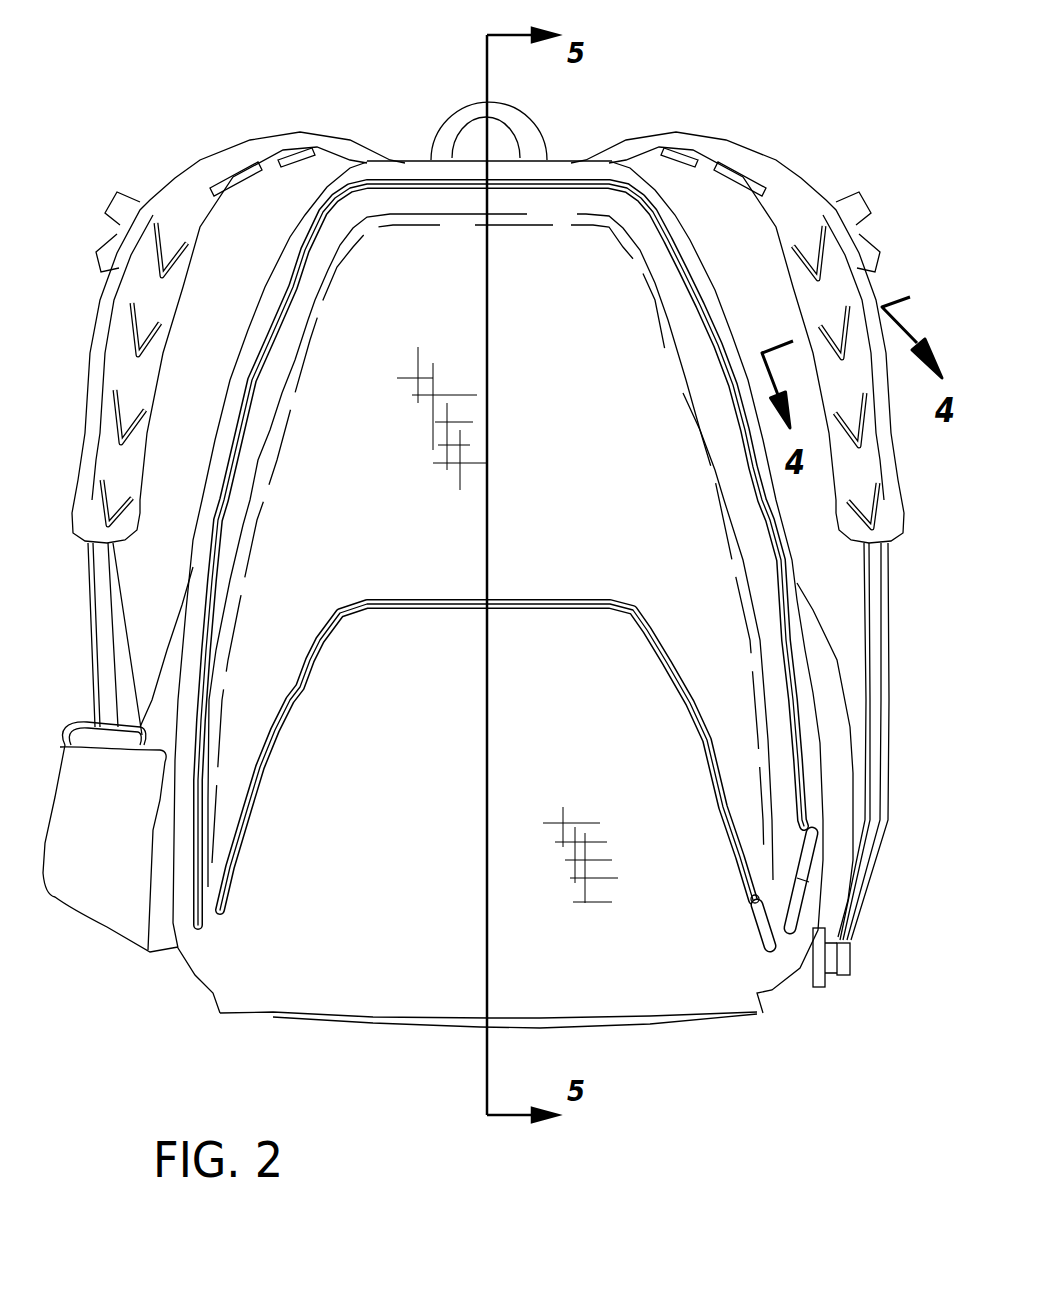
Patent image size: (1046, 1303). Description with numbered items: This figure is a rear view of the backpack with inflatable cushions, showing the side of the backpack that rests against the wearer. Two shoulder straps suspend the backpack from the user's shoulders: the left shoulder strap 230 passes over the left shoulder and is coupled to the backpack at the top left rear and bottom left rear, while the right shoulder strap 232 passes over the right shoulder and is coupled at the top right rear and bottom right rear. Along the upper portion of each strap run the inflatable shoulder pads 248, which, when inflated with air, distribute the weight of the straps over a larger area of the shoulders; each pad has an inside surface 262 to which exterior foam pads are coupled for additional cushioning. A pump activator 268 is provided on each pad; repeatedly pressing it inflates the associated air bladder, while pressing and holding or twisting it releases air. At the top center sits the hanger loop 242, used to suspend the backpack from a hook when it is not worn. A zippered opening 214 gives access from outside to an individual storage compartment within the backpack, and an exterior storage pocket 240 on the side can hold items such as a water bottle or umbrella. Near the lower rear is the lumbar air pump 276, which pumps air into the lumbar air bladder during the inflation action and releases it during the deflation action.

The zippered opening 214 is at (800, 772).
The left shoulder strap 230 is at (88, 596).
The right shoulder strap 232 is at (875, 660).
The exterior storage pocket 240 is at (110, 887).
The hanger loop 242 is at (522, 118).
The inflatable shoulder pads 248 is at (221, 157).
The inside surface 262 is at (125, 369).
The pump activator 268 is at (116, 193).
The lumbar air pump 276 is at (863, 927).